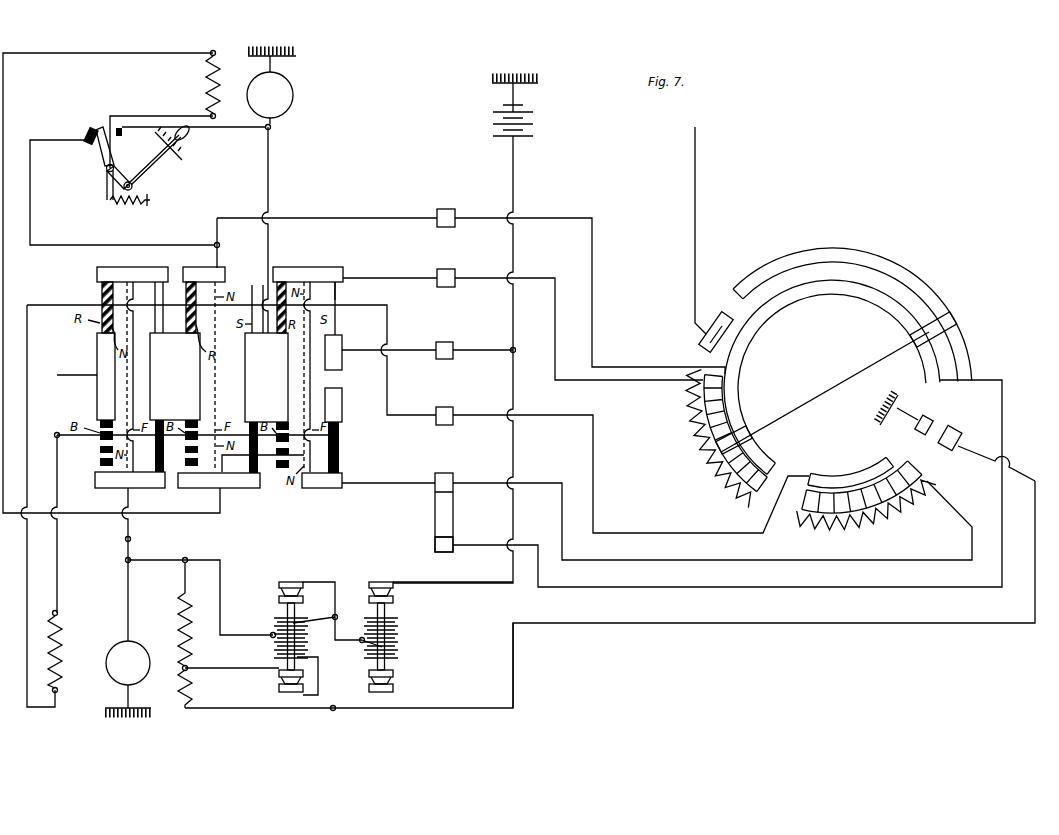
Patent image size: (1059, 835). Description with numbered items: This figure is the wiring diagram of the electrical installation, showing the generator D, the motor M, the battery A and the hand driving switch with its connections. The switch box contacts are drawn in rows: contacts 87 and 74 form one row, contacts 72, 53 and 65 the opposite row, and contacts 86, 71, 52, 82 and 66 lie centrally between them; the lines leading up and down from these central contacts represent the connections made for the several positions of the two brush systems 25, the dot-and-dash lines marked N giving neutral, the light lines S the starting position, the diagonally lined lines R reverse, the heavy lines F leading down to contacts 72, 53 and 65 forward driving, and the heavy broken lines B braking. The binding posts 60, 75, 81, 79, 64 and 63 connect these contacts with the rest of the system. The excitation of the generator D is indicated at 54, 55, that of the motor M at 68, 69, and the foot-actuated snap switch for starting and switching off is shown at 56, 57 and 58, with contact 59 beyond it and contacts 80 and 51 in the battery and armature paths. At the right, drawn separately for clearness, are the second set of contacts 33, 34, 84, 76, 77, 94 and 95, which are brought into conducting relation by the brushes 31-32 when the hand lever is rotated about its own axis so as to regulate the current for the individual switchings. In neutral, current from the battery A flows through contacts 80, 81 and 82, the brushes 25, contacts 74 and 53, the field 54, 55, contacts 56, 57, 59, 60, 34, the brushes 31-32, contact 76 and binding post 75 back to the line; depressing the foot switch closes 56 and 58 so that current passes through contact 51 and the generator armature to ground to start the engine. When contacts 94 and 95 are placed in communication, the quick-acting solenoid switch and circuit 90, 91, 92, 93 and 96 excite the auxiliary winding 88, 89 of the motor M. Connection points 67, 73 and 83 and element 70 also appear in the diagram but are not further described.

The generator field terminal 54 is at (219, 75).
The generator field terminal 55 is at (172, 140).
The contact 51 is at (206, 129).
The generator D is at (271, 87).
The snap switch contact 57 is at (122, 179).
The snap switch contact 58 is at (129, 136).
The snap switch contact 56 is at (137, 164).
The contact 59 is at (226, 245).
The electrical contact 87 is at (132, 274).
The binding post 75 is at (319, 271).
The electrical contact 74 is at (308, 274).
The electrical contact 86 is at (106, 374).
The electrical contact 71 is at (522, 410).
The core 70 is at (183, 307).
The electrical contact 52 is at (267, 377).
The electrical contact 82 is at (333, 352).
The electrical contact 66 is at (334, 430).
The electrical contact 72 is at (130, 480).
The electrical contact 53 is at (219, 480).
The electrical contact 65 is at (322, 480).
The brushes 25 is at (337, 297).
The terminal 67 is at (48, 437).
The motor field terminal 68 is at (62, 644).
The motor field terminal 69 is at (65, 690).
The terminal 73 is at (138, 539).
The terminal 83 is at (120, 561).
The auxiliary winding 88 is at (188, 553).
The auxiliary winding 89 is at (219, 635).
The solenoid switch circuit element 90 is at (285, 638).
The solenoid switch circuit element 91 is at (327, 611).
The solenoid switch circuit element 92 is at (363, 646).
The solenoid switch circuit element 93 is at (334, 718).
The solenoid switch circuit element 96 is at (438, 637).
The motor M is at (128, 677).
The binding post 60 is at (447, 210).
The binding post 81 is at (445, 343).
The contact 80 is at (522, 352).
The binding post 79 is at (445, 408).
The binding post 64 is at (445, 505).
The binding post 63 is at (444, 554).
The battery A is at (519, 107).
The regulating contact 33 is at (852, 314).
The regulating contact 34 is at (832, 377).
The regulating contact 84 is at (716, 332).
The regulating contact 76 is at (726, 439).
The brushes 31-32 is at (949, 333).
The regulating contact 77 is at (866, 495).
The regulating contact 95 is at (905, 413).
The regulating contact 94 is at (986, 449).